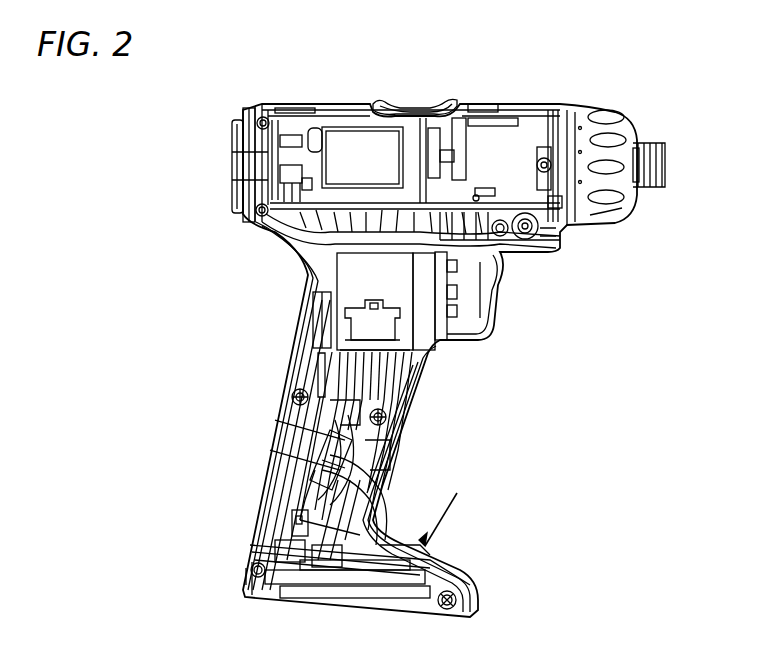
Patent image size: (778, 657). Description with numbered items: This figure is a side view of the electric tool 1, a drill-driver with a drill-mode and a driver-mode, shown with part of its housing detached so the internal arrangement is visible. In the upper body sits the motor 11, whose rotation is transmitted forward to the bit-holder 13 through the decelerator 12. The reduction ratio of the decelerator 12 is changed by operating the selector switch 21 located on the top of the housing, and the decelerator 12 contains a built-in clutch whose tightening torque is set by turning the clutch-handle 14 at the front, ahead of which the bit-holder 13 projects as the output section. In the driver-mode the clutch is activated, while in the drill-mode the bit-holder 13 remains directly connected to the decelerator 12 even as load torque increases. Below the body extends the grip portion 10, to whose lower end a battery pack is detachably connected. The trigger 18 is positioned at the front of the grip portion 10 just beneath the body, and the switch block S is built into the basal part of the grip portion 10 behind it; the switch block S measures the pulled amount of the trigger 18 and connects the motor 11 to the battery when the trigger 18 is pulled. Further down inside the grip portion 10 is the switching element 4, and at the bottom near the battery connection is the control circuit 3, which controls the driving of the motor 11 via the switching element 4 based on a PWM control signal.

The electric tool 1 is at (434, 360).
The motor 11 is at (335, 142).
The selector switch 21 is at (425, 108).
The decelerator 12 is at (505, 140).
The clutch-handle 14 is at (598, 132).
The bit-holder 13 is at (658, 188).
The trigger 18 is at (472, 296).
The switch block S is at (360, 285).
The switching element 4 is at (325, 462).
The control circuit 3 is at (435, 567).
The grip portion 10 is at (465, 592).